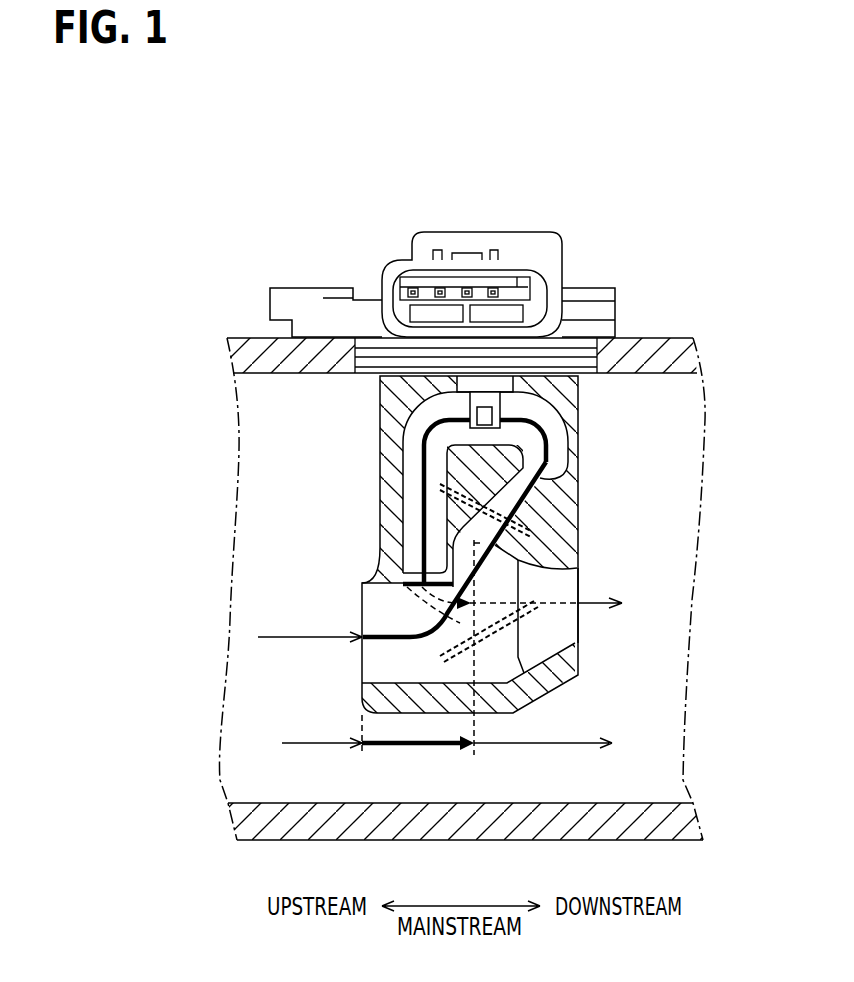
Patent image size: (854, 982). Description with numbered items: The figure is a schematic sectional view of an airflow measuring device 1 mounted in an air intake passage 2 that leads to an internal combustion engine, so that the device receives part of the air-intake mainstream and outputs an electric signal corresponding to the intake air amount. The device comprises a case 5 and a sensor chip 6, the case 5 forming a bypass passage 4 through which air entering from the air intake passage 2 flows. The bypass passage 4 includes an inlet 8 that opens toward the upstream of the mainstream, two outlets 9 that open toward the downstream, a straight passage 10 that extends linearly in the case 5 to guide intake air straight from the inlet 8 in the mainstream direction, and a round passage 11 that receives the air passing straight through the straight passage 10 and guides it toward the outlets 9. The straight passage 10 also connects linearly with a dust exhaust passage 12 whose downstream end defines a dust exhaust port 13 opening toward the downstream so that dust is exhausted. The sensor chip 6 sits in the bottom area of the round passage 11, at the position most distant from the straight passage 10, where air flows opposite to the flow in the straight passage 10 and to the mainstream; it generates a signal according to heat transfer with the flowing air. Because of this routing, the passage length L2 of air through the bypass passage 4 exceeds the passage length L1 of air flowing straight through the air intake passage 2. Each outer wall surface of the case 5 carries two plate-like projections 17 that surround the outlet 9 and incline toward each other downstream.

The airflow measuring device 1 is at (222, 200).
The air intake passage 2 is at (248, 405).
The bypass passage 4 is at (470, 537).
The case 5 is at (388, 463).
The sensor chip 6 is at (483, 407).
The inlet 8 is at (362, 607).
The outlet 9 is at (520, 565).
The straight passage 10 is at (377, 662).
The round passage 11 is at (560, 433).
The dust exhaust passage 12 is at (542, 648).
The dust exhaust port 13 is at (577, 628).
The projection 17 is at (531, 533).
The passage length L1 is at (447, 661).
The passage length L2 is at (548, 460).